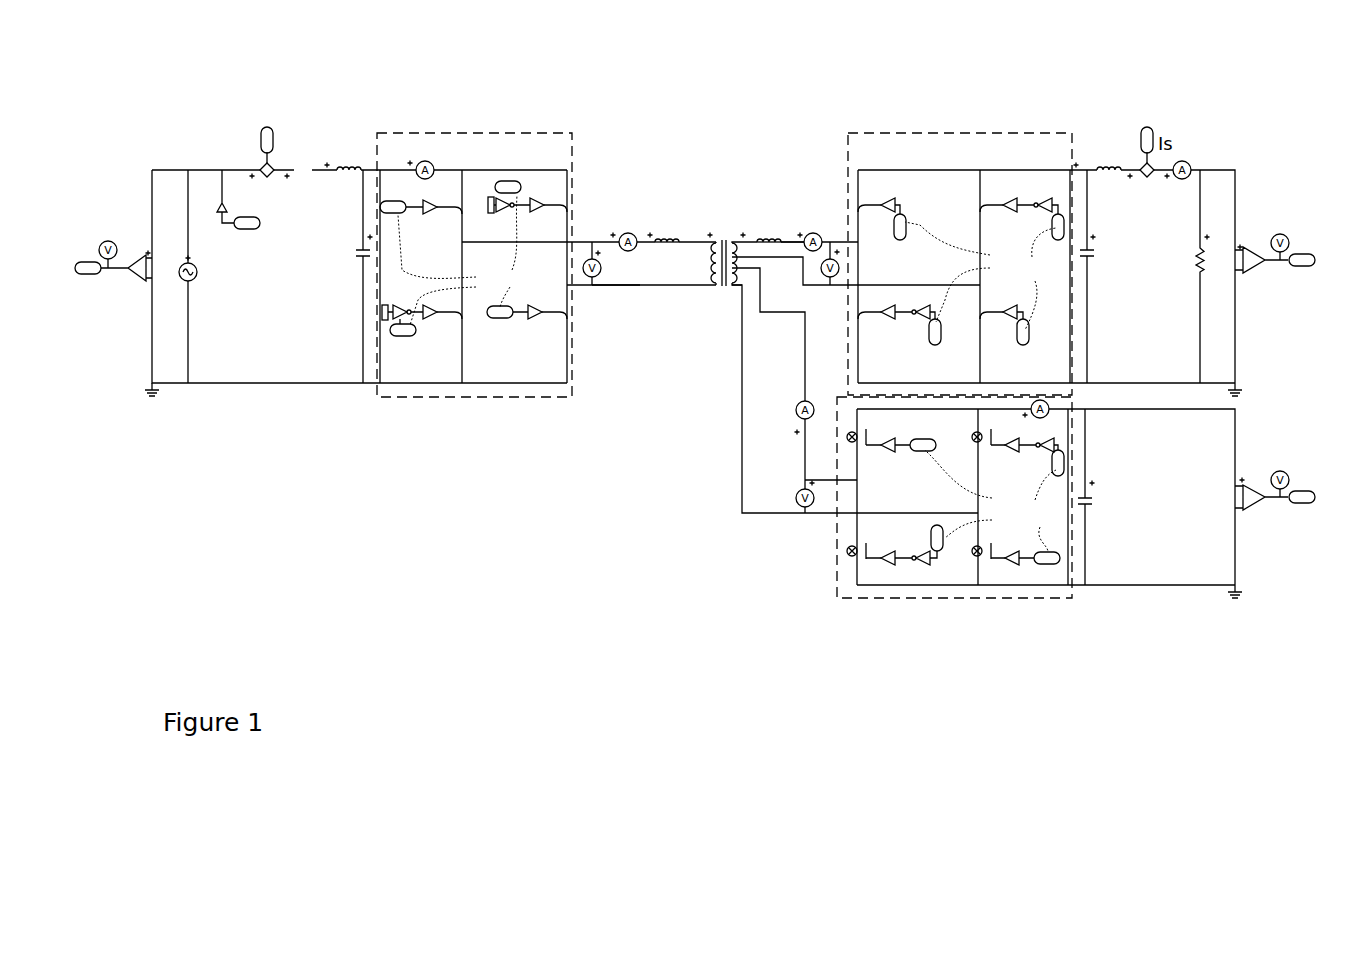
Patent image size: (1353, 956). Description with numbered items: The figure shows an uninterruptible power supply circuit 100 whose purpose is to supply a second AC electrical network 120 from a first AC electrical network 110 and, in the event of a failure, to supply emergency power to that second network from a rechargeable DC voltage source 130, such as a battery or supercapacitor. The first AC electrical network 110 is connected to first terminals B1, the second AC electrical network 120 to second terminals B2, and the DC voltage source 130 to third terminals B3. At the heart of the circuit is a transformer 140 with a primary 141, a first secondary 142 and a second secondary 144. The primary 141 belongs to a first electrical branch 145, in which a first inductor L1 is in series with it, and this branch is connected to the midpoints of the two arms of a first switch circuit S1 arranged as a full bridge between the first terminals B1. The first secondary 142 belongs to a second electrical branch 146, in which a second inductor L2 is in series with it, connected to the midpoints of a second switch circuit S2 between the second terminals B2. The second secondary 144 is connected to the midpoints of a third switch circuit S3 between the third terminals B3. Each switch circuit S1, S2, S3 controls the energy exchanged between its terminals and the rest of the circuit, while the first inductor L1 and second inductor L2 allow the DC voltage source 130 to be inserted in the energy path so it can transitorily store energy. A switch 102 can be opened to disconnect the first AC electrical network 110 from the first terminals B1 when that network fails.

The uninterruptible power supply circuit 100 is at (702, 82).
The switch 102 is at (222, 170).
The first AC electrical network 110 is at (90, 280).
The second AC electrical network 120 is at (1252, 243).
The DC voltage source 130 is at (1250, 508).
The transformer 140 is at (717, 238).
The primary 141 is at (710, 253).
The first secondary 142 is at (734, 240).
The second secondary 144 is at (733, 288).
The first electrical branch 145 is at (615, 288).
The second electrical branch 146 is at (790, 238).
The first terminals B1 is at (365, 170).
The second terminals B2 is at (1078, 163).
The third terminals B3 is at (1087, 415).
The first switch circuit S1 is at (525, 397).
The second switch circuit S2 is at (902, 133).
The third switch circuit S3 is at (930, 598).
The first inductor L1 is at (658, 235).
The second inductor L2 is at (767, 237).